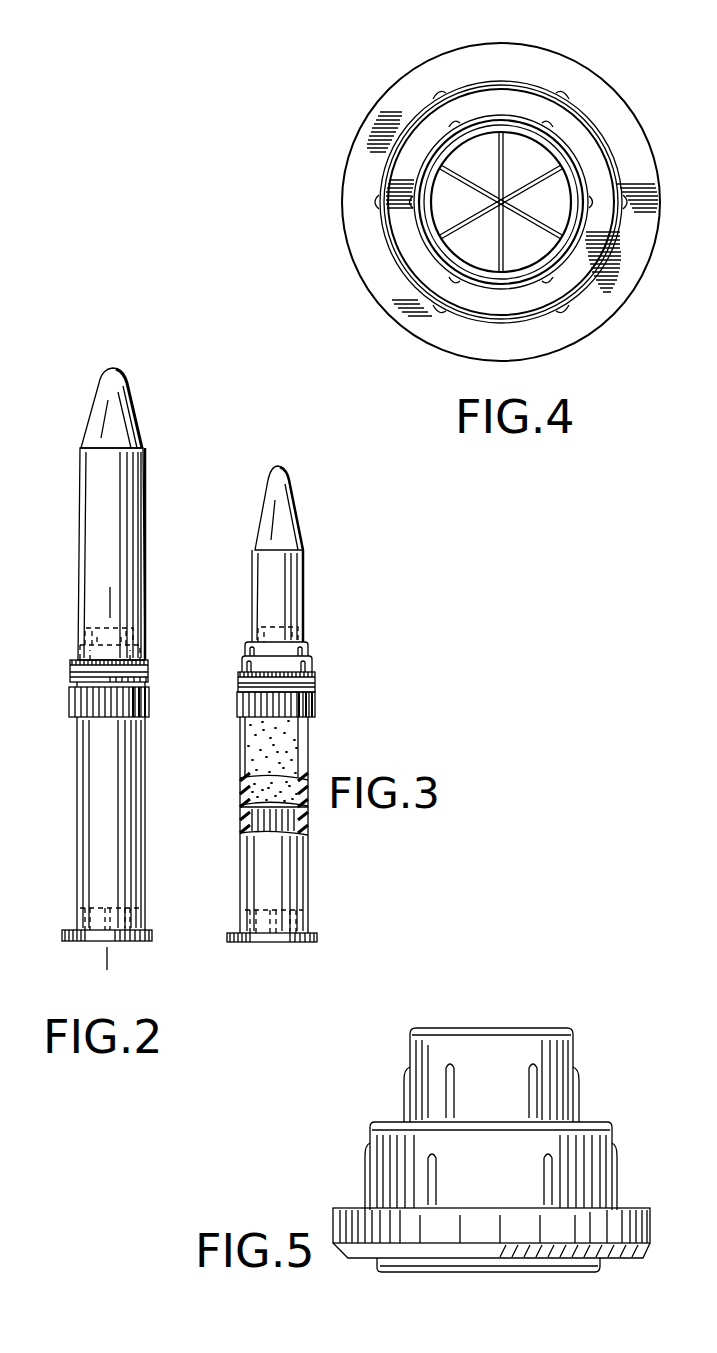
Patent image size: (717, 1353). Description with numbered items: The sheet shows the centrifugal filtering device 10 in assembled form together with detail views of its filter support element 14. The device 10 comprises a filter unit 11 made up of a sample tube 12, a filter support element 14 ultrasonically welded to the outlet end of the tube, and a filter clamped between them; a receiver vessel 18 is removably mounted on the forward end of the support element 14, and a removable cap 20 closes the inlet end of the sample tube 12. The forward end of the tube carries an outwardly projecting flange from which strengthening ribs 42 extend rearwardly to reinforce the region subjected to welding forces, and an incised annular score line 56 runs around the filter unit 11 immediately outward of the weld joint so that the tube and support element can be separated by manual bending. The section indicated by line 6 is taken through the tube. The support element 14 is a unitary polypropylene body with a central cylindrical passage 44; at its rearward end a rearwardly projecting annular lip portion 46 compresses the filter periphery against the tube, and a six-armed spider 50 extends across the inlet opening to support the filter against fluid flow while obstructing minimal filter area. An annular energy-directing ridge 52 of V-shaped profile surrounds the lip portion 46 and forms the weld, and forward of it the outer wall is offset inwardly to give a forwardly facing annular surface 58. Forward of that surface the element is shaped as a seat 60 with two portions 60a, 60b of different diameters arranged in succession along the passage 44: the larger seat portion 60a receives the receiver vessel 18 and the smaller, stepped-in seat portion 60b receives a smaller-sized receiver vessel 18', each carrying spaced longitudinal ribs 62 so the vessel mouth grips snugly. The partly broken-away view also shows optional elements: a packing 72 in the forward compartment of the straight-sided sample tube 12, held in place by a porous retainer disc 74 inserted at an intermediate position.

In FIG. 2, the section line 6- 6 is at (117, 962).
In FIG. 2, the centrifugal filtering device 10 is at (119, 675).
In FIG. 2, the filter unit 11 is at (168, 705).
In FIG. 2, the sample tube 12 is at (72, 834).
In FIG. 3, the sample tube 12 is at (318, 881).
In FIG. 2, the filter support element 14 is at (148, 680).
In FIG. 3, the filter support element 14 is at (323, 648).
In FIG. 4, the filter support element 14 is at (326, 174).
In FIG. 5, the filter support element 14 is at (572, 1010).
In FIG. 2, the receiver vessel 18 is at (90, 514).
In FIG. 3, the smaller-sized receiver vessel 18' is at (308, 554).
In FIG. 2, the removable cap 20 is at (83, 940).
In FIG. 3, the removable cap 20 is at (297, 944).
In FIG. 2, the strengthening ribs 42 is at (82, 703).
In FIG. 3, the strengthening ribs 42 is at (315, 707).
In FIG. 4, the central cylindrical passage 44 is at (530, 150).
In FIG. 5, the annular lip portion 46 is at (583, 1271).
In FIG. 4, the six-armed spider 50 is at (458, 220).
In FIG. 5, the energy-directing ridge 52 is at (640, 1258).
In FIG. 2, the annular score line 56 is at (72, 678).
In FIG. 3, the annular score line 56 is at (314, 683).
In FIG. 4, the annular forwardly facing surface 58 is at (388, 293).
In FIG. 5, the annular forwardly facing surface 58 is at (660, 1195).
In FIG. 2, the seat 60 is at (135, 645).
In FIG. 5, the seat 60 is at (392, 1108).
In FIG. 3, the seat portion 60a is at (312, 658).
In FIG. 4, the seat portion 60a is at (537, 318).
In FIG. 5, the seat portion 60a is at (613, 1150).
In FIG. 3, the seat portion 60b is at (283, 627).
In FIG. 4, the seat portion 60b is at (570, 253).
In FIG. 5, the seat portion 60b is at (572, 1054).
In FIG. 4, the longitudinal ribs 62 is at (547, 127).
In FIG. 5, the longitudinal ribs 62 is at (448, 1087).
In FIG. 3, the packing 72 is at (248, 788).
In FIG. 3, the porous retainer disc 74 is at (270, 812).